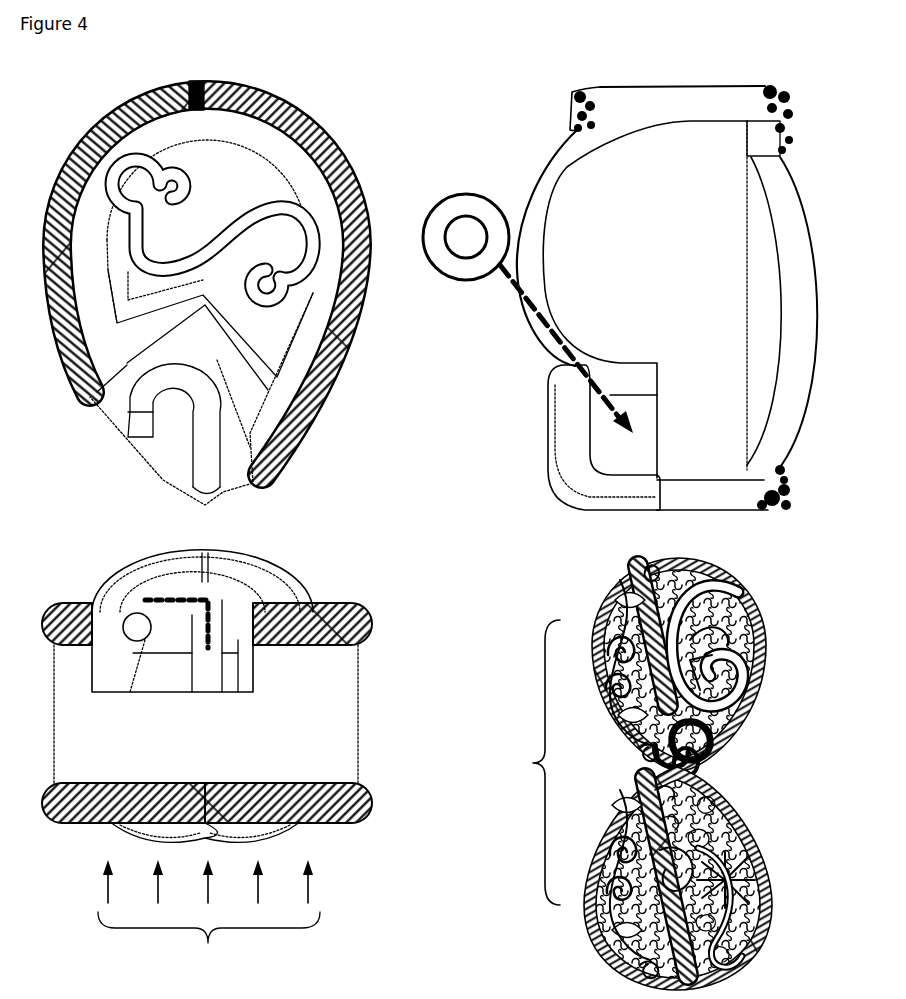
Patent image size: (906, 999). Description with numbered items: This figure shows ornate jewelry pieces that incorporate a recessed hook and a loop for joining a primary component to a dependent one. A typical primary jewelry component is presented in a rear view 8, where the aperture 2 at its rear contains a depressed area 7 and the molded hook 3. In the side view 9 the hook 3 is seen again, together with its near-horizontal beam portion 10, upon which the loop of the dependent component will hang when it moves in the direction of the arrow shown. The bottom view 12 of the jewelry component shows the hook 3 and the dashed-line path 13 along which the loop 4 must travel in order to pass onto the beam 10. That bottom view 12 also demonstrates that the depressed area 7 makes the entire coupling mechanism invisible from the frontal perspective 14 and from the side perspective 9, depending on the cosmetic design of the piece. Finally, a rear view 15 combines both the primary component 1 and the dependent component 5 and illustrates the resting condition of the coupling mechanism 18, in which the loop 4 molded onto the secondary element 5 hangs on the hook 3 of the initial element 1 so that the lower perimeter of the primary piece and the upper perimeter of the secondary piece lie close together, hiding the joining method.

The initial jewelry element 1 is at (745, 602).
The aperture 2 is at (190, 344).
The hook 3 is at (200, 400).
The loop 4 is at (456, 192).
The secondary jewelry element 5 is at (598, 920).
The depressed area 7 is at (118, 666).
The rear view 8 is at (246, 102).
The side view 9 is at (636, 104).
The near-horizontal beam portion 10 is at (220, 636).
The bottom view 12 is at (366, 757).
The path 13 is at (208, 652).
The frontal perspective 14 is at (209, 917).
The rear view 15 is at (532, 762).
The coupling mechanism 18 is at (753, 720).